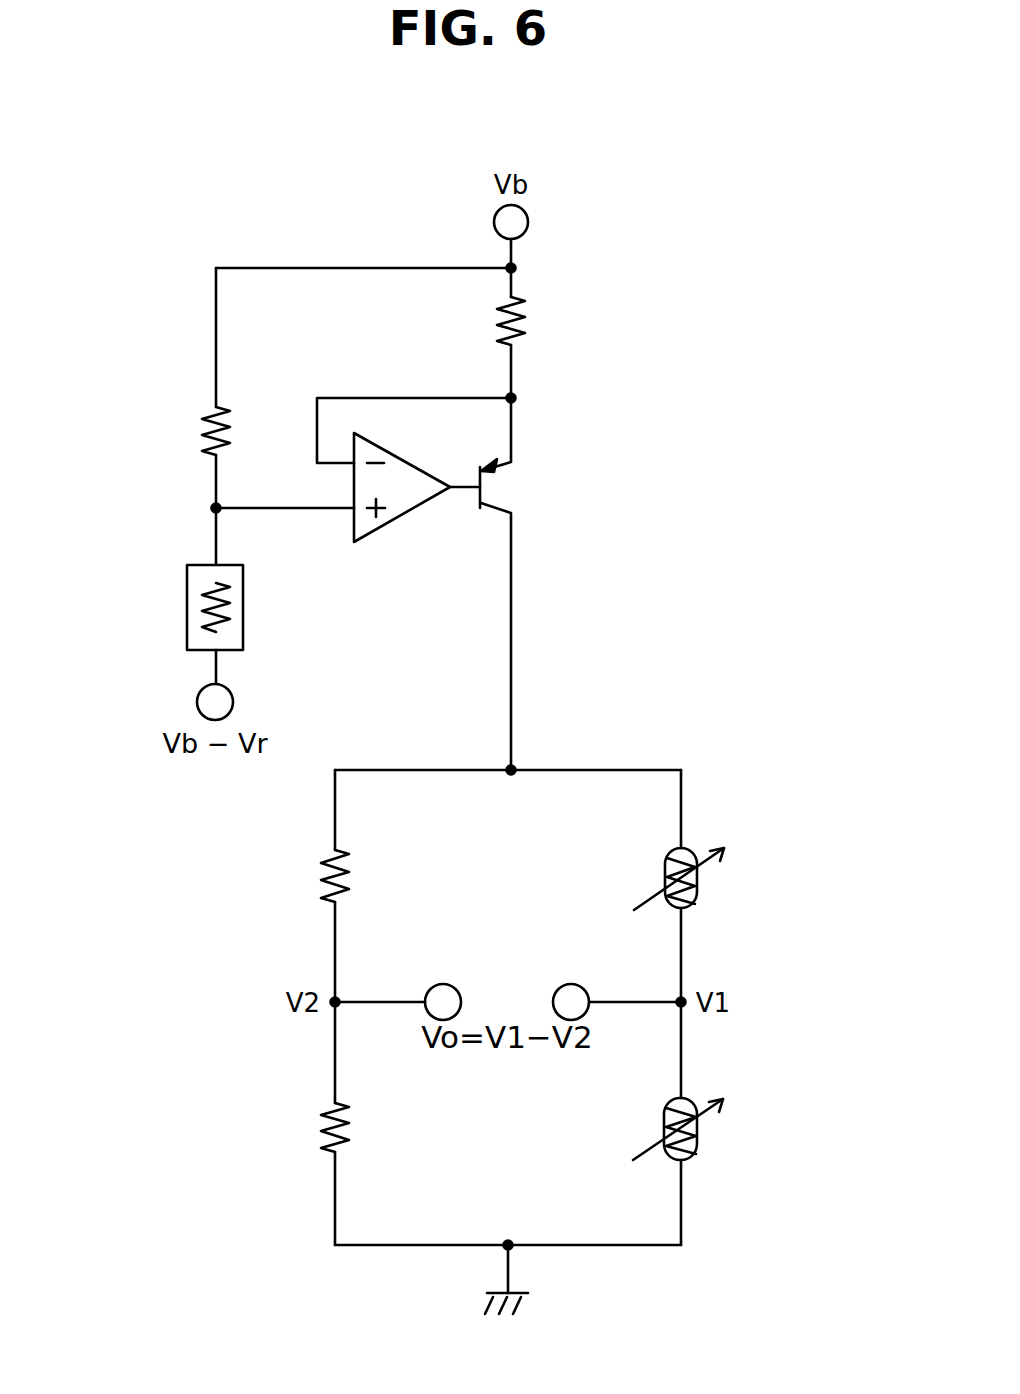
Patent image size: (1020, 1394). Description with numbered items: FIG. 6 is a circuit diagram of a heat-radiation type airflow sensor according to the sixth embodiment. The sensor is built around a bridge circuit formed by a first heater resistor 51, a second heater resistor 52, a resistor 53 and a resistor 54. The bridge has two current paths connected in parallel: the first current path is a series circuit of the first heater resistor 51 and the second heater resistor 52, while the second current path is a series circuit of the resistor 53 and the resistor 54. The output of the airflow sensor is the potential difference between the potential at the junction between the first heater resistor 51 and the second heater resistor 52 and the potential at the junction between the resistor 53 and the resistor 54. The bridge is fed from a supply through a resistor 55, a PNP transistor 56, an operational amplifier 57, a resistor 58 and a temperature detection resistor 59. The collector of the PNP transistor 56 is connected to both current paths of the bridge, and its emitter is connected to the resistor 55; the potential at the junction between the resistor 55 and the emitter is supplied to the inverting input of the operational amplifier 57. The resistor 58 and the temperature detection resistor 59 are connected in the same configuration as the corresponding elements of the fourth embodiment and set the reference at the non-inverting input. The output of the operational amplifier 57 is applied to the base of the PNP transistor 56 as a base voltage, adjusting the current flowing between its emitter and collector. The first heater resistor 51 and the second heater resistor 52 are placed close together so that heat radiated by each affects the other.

The first heater resistor 51 is at (695, 907).
The second heater resistor 52 is at (695, 1158).
The resistor 53 is at (320, 883).
The resistor 54 is at (320, 1131).
The resistor 55 is at (528, 321).
The PNP transistor 56 is at (506, 470).
The operational amplifier 57 is at (409, 512).
The resistor 58 is at (200, 433).
The temperature detection resistor 59 is at (186, 612).